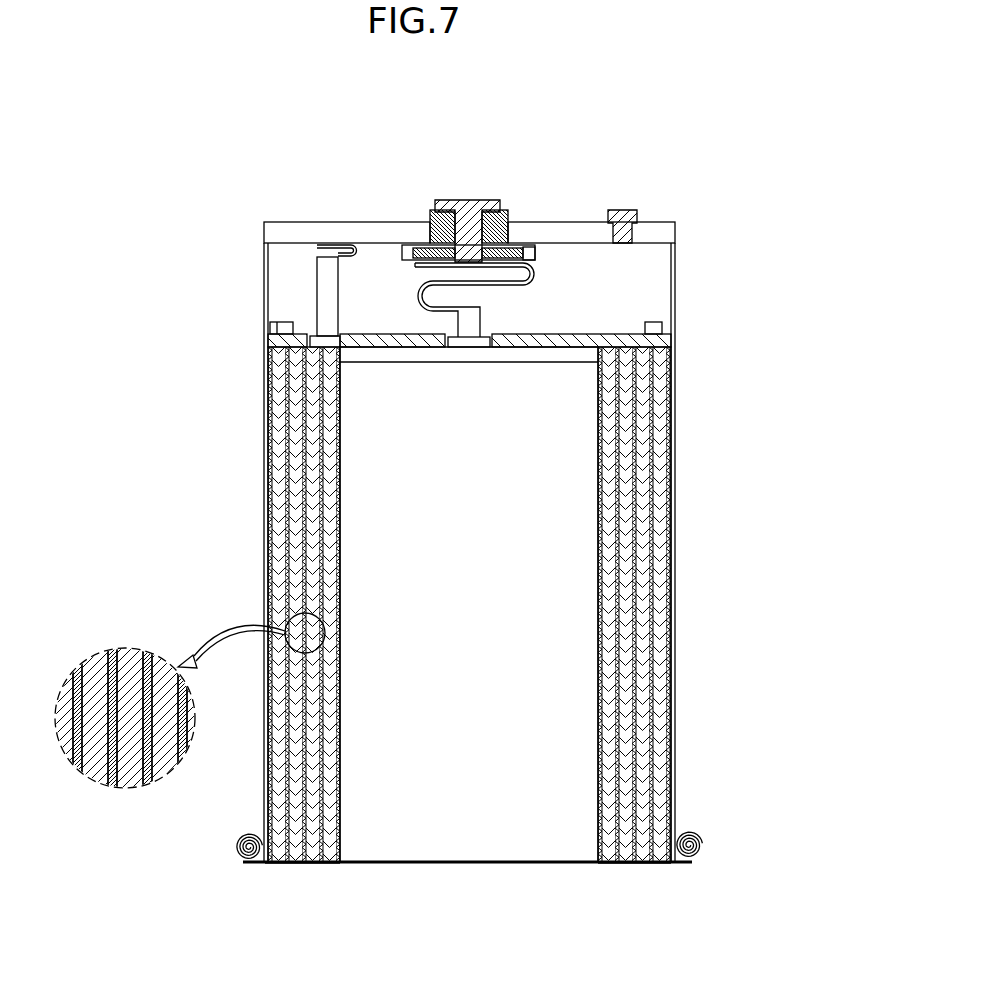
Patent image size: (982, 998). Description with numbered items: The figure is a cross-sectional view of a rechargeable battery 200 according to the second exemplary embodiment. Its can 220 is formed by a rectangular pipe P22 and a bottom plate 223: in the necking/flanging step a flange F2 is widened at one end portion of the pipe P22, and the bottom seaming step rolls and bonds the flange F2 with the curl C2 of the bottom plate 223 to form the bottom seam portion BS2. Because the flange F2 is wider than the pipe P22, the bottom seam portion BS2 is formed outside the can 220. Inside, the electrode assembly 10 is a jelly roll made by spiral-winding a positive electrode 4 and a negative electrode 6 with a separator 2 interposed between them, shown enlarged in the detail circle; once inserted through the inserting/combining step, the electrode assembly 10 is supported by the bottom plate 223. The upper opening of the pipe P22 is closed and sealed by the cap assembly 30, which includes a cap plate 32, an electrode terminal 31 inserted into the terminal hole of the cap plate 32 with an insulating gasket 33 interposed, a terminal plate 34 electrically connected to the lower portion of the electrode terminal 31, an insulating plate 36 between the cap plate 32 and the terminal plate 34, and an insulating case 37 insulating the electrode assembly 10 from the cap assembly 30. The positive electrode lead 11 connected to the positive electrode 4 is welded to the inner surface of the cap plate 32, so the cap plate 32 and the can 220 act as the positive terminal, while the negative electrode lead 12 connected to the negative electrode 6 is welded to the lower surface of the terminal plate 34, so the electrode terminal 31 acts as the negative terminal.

The rechargeable battery 200 is at (487, 116).
The cap assembly 30 is at (584, 218).
The electrode terminal 31 is at (466, 206).
The cap plate 32 is at (316, 230).
The insulating gasket 33 is at (428, 212).
The terminal plate 34 is at (536, 253).
The insulating plate 36 is at (530, 244).
The insulating case 37 is at (663, 338).
The positive electrode lead 11 is at (323, 292).
The negative electrode lead 12 is at (528, 283).
The electrode assembly 10 is at (280, 554).
The separator 2 is at (110, 652).
The positive electrode 4 is at (128, 772).
The negative electrode 6 is at (168, 760).
The curl C2 is at (236, 847).
The flange F2 is at (238, 860).
The bottom seam portion BS2 is at (256, 870).
The bottom plate 223 is at (583, 863).
The rectangular pipe P22 is at (682, 787).
The can 220 is at (610, 940).